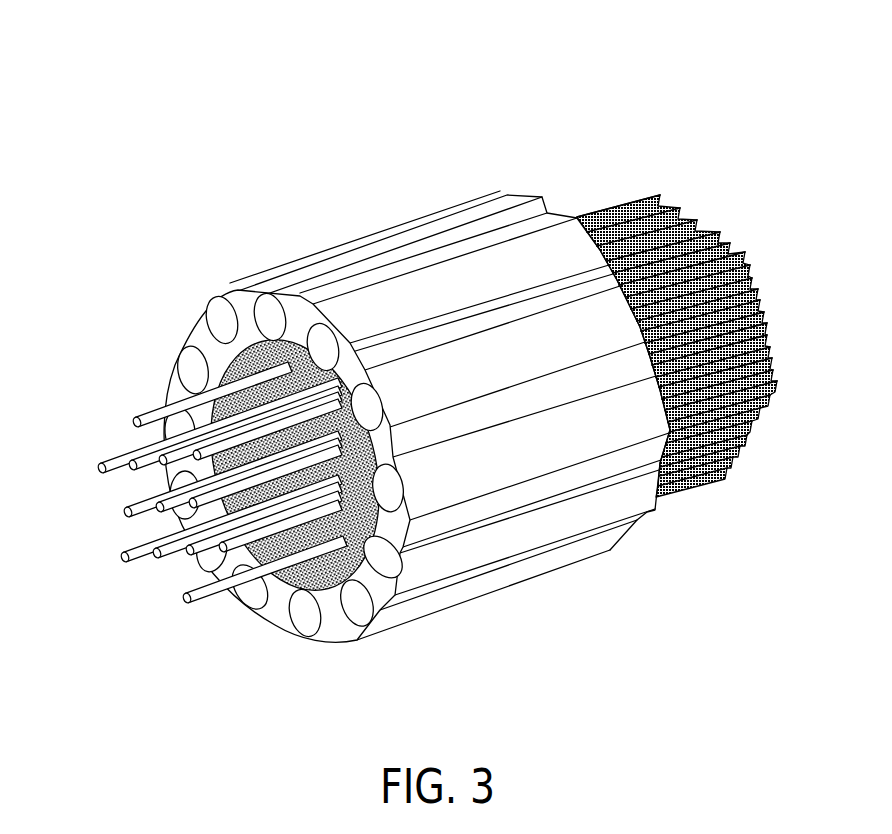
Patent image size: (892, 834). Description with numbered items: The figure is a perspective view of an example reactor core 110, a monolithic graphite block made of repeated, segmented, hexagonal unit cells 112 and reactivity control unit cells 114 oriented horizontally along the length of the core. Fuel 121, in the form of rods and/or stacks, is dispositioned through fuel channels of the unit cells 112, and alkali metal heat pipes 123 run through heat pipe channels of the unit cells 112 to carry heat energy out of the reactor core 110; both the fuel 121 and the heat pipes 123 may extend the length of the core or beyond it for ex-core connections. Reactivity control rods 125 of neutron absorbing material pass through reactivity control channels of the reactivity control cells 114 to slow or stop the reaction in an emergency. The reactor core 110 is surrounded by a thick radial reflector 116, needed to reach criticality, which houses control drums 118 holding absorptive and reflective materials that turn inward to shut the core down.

The reactor core 110 is at (489, 108).
The unit cell 112 is at (297, 355).
The reactivity control unit cell 114 is at (390, 575).
The radial reflector 116 is at (280, 610).
The control drum 118 is at (178, 340).
The fuel 121 is at (350, 590).
The heat pipe 123 is at (760, 350).
The reactivity control rod 125 is at (132, 421).